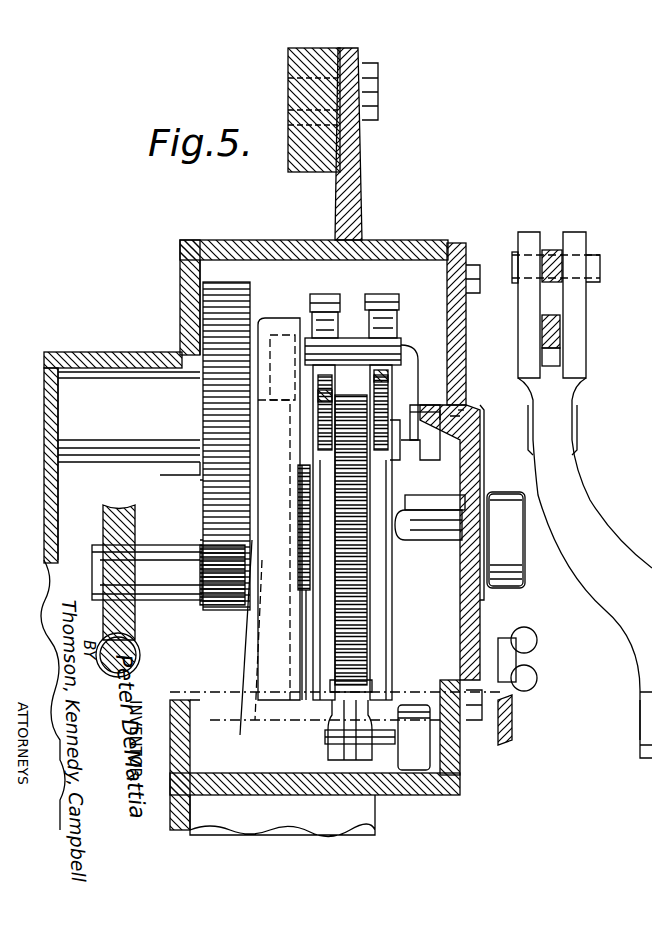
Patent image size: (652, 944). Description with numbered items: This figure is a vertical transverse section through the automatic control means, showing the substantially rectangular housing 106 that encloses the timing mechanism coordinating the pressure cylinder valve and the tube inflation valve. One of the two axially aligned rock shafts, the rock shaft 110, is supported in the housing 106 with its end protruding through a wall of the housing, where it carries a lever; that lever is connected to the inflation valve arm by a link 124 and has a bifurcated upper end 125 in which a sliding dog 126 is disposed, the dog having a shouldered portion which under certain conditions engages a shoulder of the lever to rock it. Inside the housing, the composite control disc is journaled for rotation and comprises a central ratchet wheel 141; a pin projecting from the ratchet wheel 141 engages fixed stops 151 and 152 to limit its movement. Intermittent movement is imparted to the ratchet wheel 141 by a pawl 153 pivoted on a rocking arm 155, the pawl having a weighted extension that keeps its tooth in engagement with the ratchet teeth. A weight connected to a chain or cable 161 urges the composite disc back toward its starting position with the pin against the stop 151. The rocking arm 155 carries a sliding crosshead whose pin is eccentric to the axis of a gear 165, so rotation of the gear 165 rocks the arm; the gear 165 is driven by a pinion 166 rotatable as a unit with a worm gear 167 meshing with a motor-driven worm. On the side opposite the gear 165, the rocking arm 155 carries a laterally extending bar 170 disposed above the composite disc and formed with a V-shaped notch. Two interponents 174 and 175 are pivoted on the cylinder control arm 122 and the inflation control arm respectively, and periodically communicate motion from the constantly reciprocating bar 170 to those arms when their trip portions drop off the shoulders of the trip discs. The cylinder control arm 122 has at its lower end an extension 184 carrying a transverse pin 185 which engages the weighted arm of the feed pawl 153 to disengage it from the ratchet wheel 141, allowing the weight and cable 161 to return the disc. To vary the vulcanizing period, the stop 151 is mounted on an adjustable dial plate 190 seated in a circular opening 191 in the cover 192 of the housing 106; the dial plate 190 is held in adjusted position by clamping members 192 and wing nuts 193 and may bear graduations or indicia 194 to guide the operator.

The housing 106 is at (182, 266).
The rock shaft 110 is at (640, 712).
The cylinder control arm 122 is at (470, 605).
The link 124 is at (554, 250).
The bifurcated upper end 125 is at (578, 300).
The sliding dog 126 is at (562, 336).
The ratchet wheel 141 is at (245, 640).
The fixed stop 151 is at (428, 530).
The fixed stop 152 is at (420, 455).
The pawl 153 is at (352, 690).
The rocking arm 155 is at (270, 320).
The chain or cable 161 is at (303, 572).
The gear 165 is at (205, 488).
The pinion 166 is at (202, 600).
The worm gear 167 is at (118, 512).
The bar 170 is at (390, 345).
The interponent 174 is at (392, 291).
The interponent 175 is at (325, 291).
The extension 184 is at (425, 760).
The transverse pin 185 is at (384, 745).
The dial plate 190 is at (481, 460).
The circular opening 191 is at (468, 400).
The cover 192 is at (458, 250).
The wing nuts 193 is at (514, 660).
The graduations or indicia 194 is at (472, 412).